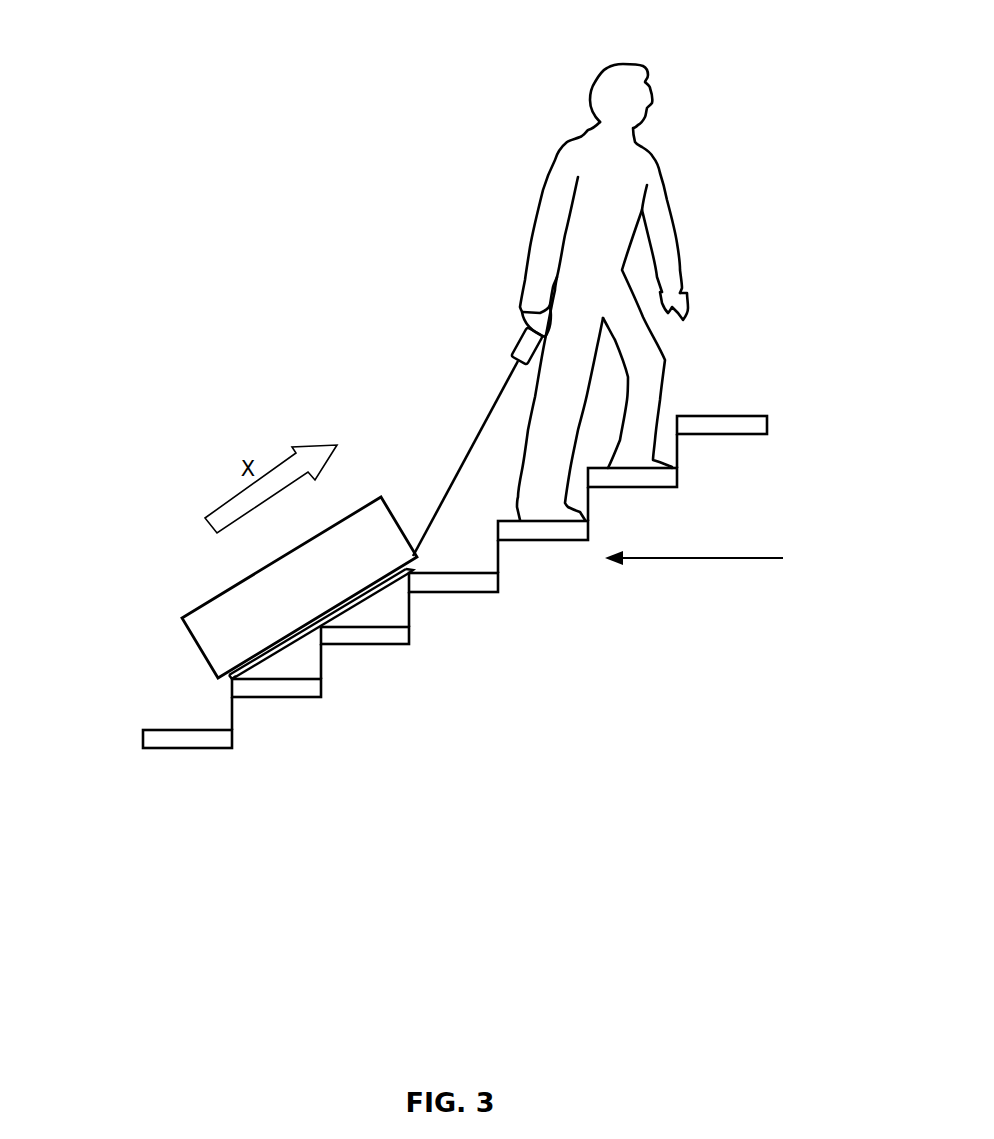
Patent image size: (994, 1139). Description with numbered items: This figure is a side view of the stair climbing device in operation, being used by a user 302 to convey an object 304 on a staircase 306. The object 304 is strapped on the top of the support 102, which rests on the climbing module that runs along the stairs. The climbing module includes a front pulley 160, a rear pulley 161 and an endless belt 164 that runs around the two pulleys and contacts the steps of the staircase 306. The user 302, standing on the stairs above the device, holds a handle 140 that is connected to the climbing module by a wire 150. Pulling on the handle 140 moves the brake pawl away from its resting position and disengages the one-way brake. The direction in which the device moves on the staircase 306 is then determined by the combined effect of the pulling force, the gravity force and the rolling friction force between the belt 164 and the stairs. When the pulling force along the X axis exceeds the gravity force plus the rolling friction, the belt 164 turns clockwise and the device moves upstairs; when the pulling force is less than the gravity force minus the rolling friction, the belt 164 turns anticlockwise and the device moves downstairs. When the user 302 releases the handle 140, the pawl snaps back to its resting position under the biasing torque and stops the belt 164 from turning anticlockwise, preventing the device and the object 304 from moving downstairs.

The user 302 is at (601, 252).
The handle 140 is at (525, 333).
The wire 150 is at (481, 429).
The object 304 is at (232, 626).
The staircase 306 is at (730, 563).
The support 102 is at (302, 623).
The endless belt 164 is at (352, 607).
The rear pulley 161 is at (233, 681).
The front pulley 160 is at (409, 577).